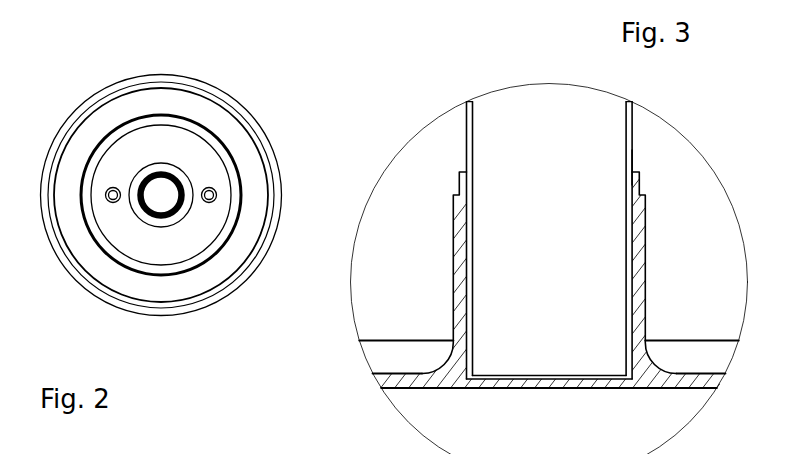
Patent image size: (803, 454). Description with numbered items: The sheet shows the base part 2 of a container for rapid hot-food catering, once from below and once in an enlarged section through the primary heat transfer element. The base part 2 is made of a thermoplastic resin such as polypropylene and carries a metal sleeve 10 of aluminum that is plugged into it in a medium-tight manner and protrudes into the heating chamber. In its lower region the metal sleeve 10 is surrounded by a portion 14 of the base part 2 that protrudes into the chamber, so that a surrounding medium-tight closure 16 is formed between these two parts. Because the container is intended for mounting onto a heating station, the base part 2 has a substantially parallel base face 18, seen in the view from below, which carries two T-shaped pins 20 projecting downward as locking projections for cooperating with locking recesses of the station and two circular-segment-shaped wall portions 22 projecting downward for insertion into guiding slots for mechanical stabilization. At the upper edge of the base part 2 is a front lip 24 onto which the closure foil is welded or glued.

In FIG. 2, the base part 2 is at (250, 267).
In FIG. 3, the base part 2 is at (410, 378).
In FIG. 2, the metal sleeve 10 is at (178, 173).
In FIG. 3, the metal sleeve 10 is at (631, 122).
In FIG. 3, the portion of the base part 14 is at (637, 325).
In FIG. 3, the medium-tight closure 16 is at (613, 161).
In FIG. 2, the base face 18 is at (130, 230).
In FIG. 2, the T-shaped pins 20 is at (112, 191).
In FIG. 2, the circular-segment-shaped wall portions 22 is at (81, 205).
In FIG. 2, the front lip 24 is at (123, 85).